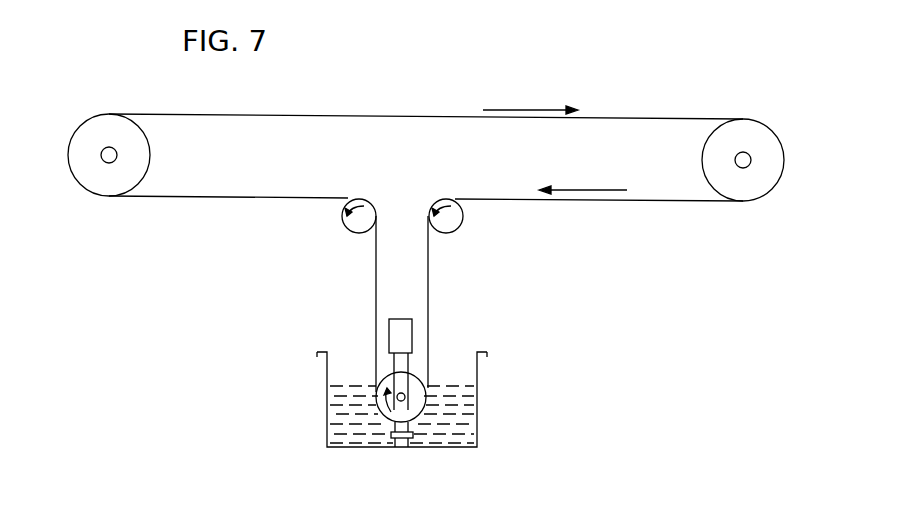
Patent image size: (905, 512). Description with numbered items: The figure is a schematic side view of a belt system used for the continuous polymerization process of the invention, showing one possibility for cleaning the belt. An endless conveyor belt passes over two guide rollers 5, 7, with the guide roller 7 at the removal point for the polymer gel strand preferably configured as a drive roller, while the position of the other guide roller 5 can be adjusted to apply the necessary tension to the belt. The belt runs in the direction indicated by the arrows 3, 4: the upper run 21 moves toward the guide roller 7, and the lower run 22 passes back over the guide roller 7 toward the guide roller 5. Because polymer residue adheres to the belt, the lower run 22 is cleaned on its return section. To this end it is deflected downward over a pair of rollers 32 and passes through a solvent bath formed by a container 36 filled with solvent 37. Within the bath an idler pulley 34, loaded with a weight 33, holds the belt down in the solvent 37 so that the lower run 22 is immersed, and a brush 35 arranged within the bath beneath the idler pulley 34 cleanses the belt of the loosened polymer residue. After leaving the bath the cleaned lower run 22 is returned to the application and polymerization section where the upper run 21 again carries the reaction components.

The arrow indicating belt direction 3 is at (522, 108).
The arrow indicating belt direction 4 is at (593, 192).
The guide roller 5 is at (97, 128).
The guide roller 7 is at (748, 132).
The upper run 21 is at (427, 115).
The lower run 22 is at (640, 201).
The guide rollers 32 is at (455, 229).
The weight 33 is at (412, 328).
The idler pulley 34 is at (423, 397).
The brush 35 is at (396, 438).
The container 36 is at (327, 374).
The solvent 37 is at (327, 412).